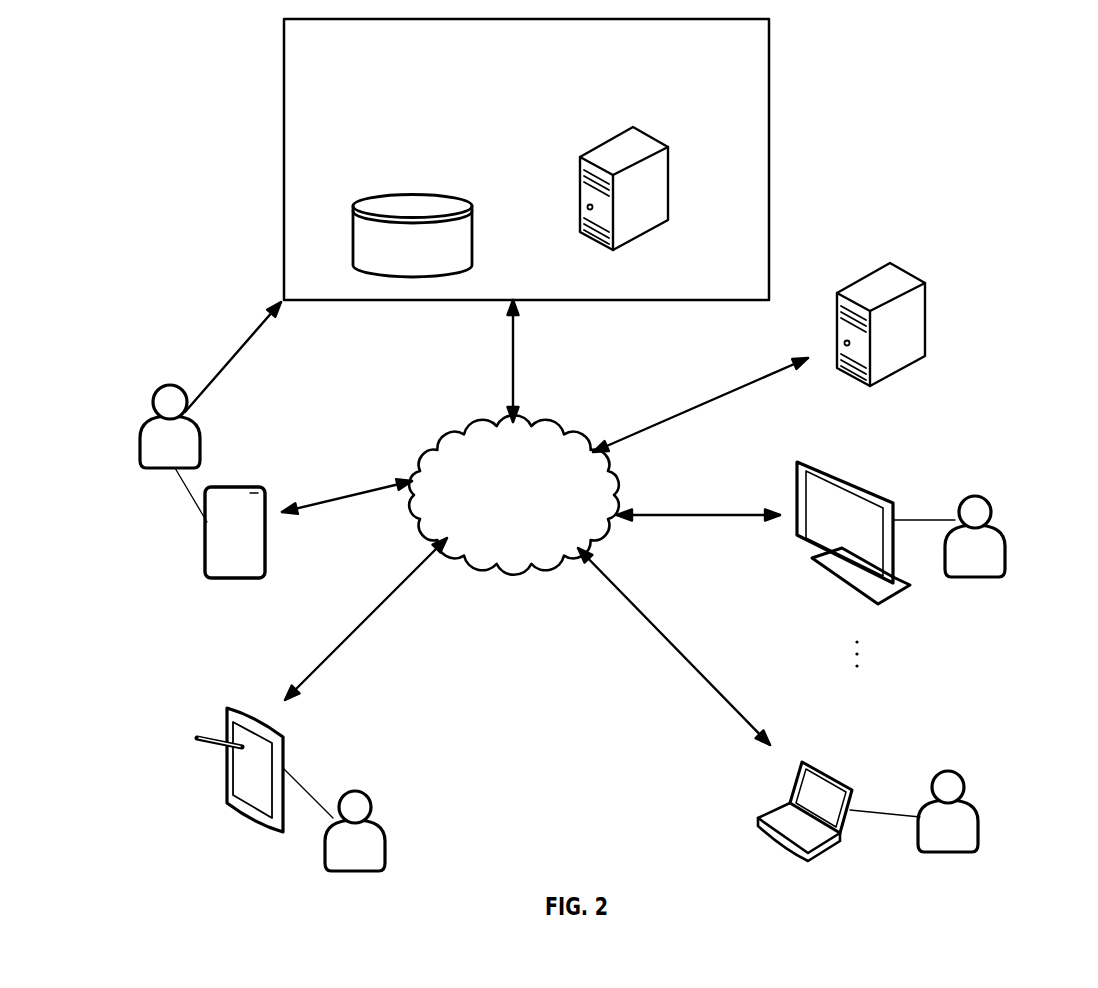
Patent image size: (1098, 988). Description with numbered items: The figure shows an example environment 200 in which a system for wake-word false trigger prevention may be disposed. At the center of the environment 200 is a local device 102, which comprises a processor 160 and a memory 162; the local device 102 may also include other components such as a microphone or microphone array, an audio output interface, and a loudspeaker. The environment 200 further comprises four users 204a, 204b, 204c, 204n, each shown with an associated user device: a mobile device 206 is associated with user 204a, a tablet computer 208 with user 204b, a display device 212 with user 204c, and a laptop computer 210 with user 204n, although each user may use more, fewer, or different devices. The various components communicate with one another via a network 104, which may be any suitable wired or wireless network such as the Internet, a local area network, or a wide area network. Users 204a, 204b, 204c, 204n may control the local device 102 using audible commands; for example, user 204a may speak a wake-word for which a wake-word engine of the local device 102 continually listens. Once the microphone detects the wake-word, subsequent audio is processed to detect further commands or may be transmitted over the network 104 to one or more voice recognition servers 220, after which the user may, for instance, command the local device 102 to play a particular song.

The environment 200 is at (886, 125).
The local device 102 is at (602, 56).
The memory 162 is at (407, 195).
The processor 160 is at (667, 155).
The voice recognition servers 220 is at (910, 320).
The network 104 is at (530, 522).
The user 204a is at (150, 393).
The mobile device 206 is at (258, 488).
The tablet computer 208 is at (237, 707).
The user 204b is at (387, 843).
The display device 212 is at (800, 460).
The user 204c is at (1002, 505).
The laptop computer 210 is at (810, 763).
The user 204n is at (973, 802).